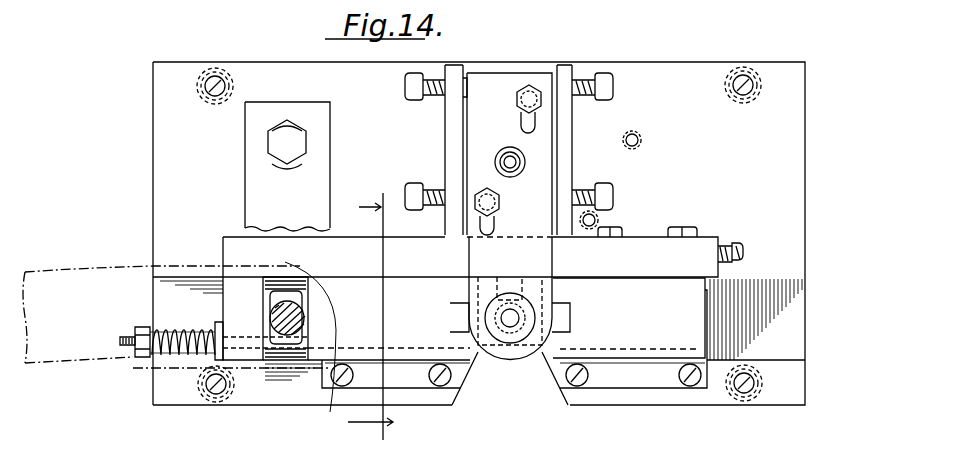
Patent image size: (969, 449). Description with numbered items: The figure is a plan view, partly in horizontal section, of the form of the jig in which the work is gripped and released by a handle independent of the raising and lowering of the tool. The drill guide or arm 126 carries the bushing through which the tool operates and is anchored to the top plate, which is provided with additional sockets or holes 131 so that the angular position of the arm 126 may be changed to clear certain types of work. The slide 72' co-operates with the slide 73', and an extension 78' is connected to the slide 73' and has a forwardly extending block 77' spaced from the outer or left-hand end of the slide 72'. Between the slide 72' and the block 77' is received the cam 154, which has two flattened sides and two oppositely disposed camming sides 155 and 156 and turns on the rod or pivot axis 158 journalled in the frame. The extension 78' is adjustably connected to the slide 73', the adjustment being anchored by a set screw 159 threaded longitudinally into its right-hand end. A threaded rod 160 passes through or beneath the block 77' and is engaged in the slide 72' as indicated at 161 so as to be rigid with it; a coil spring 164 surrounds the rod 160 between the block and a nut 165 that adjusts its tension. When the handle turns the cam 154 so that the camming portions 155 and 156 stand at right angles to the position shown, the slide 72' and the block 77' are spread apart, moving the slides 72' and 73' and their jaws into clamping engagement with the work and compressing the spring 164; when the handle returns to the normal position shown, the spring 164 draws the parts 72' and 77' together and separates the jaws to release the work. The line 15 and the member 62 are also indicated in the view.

The sockets or holes 131 is at (637, 135).
The set screw 159 is at (730, 245).
The extension 78' is at (435, 252).
The block 77' is at (243, 298).
The slide 73' is at (630, 319).
The slide 72' is at (389, 337).
The cam 154 is at (303, 302).
The camming side 155 is at (263, 297).
The camming side 156 is at (287, 352).
The rod or pivot axis 158 is at (282, 302).
The engagement of rod in slide 161 is at (314, 355).
The drill guide or arm 126 is at (505, 357).
The threaded rod 160 is at (120, 338).
The nut 165 is at (142, 357).
The coil spring 164 is at (165, 330).
The washer 62 is at (217, 324).
The section line 15 is at (370, 312).